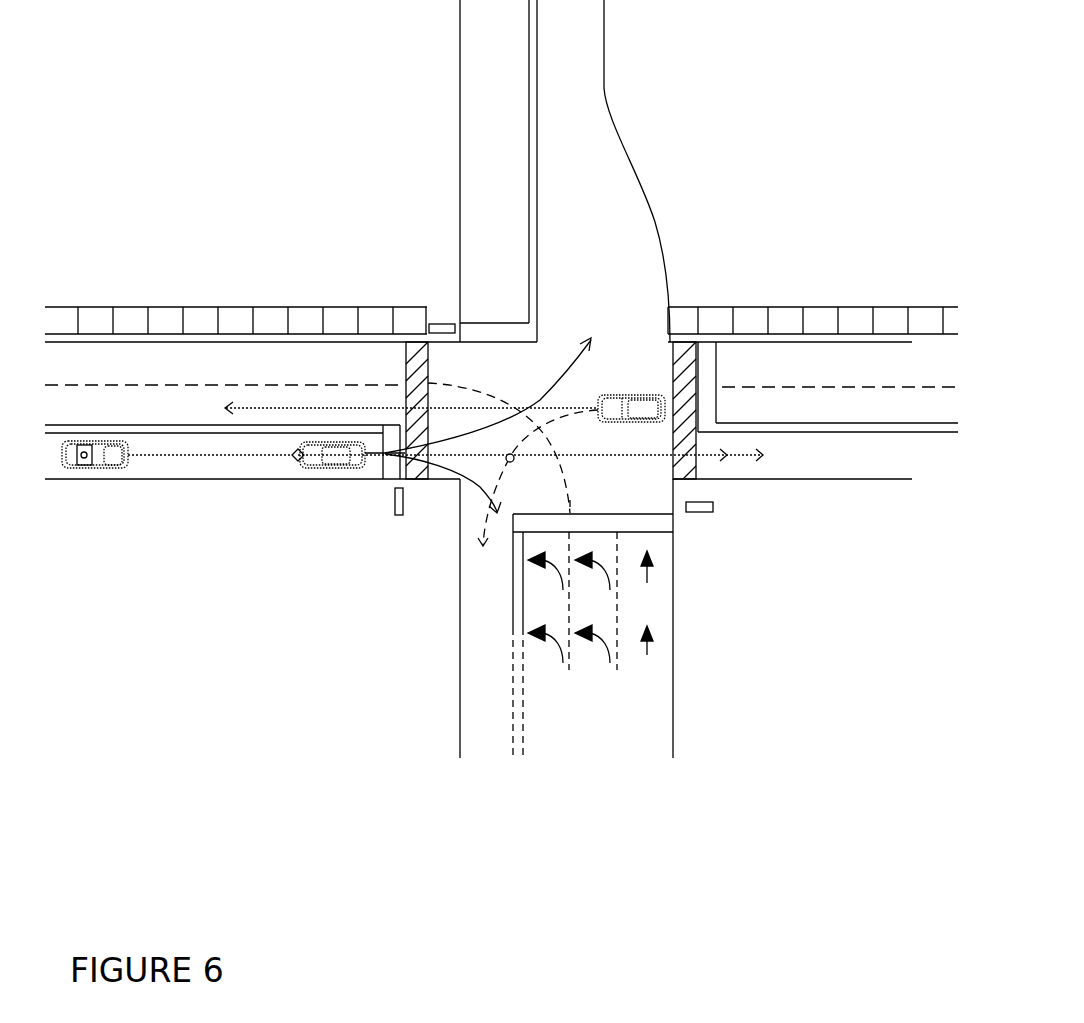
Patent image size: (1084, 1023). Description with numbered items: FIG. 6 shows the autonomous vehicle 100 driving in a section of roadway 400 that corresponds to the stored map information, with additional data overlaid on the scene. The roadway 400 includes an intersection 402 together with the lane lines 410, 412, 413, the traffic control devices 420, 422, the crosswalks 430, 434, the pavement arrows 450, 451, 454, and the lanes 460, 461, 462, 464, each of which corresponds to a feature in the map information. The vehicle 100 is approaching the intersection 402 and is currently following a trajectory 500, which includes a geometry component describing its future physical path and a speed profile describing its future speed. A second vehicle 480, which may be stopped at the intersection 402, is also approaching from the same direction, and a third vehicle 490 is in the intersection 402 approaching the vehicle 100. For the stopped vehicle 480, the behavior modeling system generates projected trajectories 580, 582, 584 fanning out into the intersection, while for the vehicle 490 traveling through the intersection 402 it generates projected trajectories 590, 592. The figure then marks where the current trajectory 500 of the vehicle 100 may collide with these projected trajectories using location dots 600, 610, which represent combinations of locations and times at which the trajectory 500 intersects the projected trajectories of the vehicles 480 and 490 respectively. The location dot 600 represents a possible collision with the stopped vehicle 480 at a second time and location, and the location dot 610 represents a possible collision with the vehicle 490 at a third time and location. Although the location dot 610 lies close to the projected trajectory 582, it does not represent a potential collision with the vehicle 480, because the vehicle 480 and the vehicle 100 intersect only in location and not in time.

The vehicle 100 is at (95, 470).
The roadway 400 is at (168, 928).
The intersection 402 is at (550, 410).
The lane line 410 is at (200, 382).
The lane line 412 is at (513, 748).
The lane line 413 is at (529, 140).
The traffic control device 420 is at (713, 510).
The traffic control device 422 is at (442, 323).
The crosswalk 430 is at (405, 373).
The crosswalk 434 is at (700, 340).
The arrow 450 is at (528, 628).
The arrow 451 is at (602, 641).
The arrow 454 is at (650, 653).
The lane 460 is at (550, 601).
The lane 461 is at (598, 601).
The lane 462 is at (646, 616).
The lane 464 is at (225, 366).
The vehicle 480 is at (318, 468).
The vehicle 490 is at (635, 393).
The trajectory 500 is at (210, 457).
The projected trajectory 580 is at (444, 466).
The projected trajectory 582 is at (715, 452).
The projected trajectory 584 is at (583, 358).
The projected trajectory 590 is at (273, 410).
The projected trajectory 592 is at (482, 530).
The location dot 600 is at (296, 460).
The location dot 610 is at (514, 462).